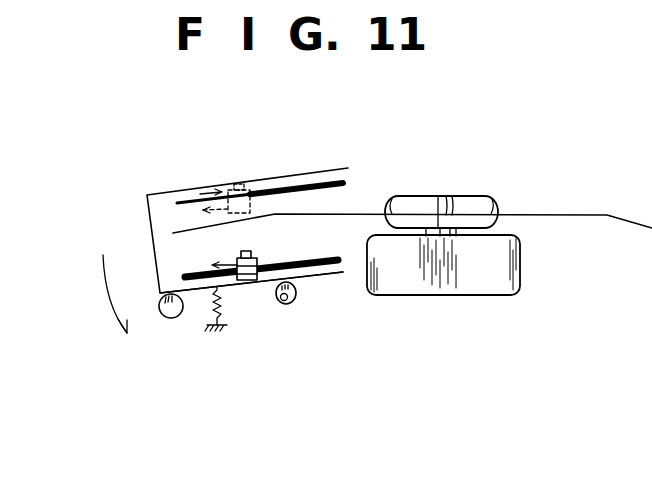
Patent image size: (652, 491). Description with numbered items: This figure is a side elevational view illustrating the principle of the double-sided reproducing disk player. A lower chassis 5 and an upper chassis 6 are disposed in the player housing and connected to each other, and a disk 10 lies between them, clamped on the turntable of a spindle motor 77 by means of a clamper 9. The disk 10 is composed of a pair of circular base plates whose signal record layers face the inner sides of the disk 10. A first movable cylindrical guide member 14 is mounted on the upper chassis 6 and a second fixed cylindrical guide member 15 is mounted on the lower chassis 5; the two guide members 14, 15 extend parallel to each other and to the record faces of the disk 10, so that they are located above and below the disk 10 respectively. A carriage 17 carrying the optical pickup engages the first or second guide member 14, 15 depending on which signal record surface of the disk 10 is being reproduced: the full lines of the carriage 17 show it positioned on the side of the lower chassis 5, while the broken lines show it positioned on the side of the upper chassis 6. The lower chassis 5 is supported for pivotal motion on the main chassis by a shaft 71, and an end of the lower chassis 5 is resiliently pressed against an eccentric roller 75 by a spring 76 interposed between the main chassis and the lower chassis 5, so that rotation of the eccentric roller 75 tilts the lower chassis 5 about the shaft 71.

The lower chassis 5 is at (345, 273).
The upper chassis 6 is at (218, 182).
The clamper 9 is at (483, 197).
The disk 10 is at (367, 213).
The first movable cylindrical guide member 14 is at (297, 180).
The second fixed cylindrical guide member 15 is at (263, 280).
The carriage 17 is at (190, 183).
The shaft 71 is at (297, 300).
The eccentric roller 75 is at (163, 317).
The spring 76 is at (208, 307).
The spindle motor 77 is at (482, 268).